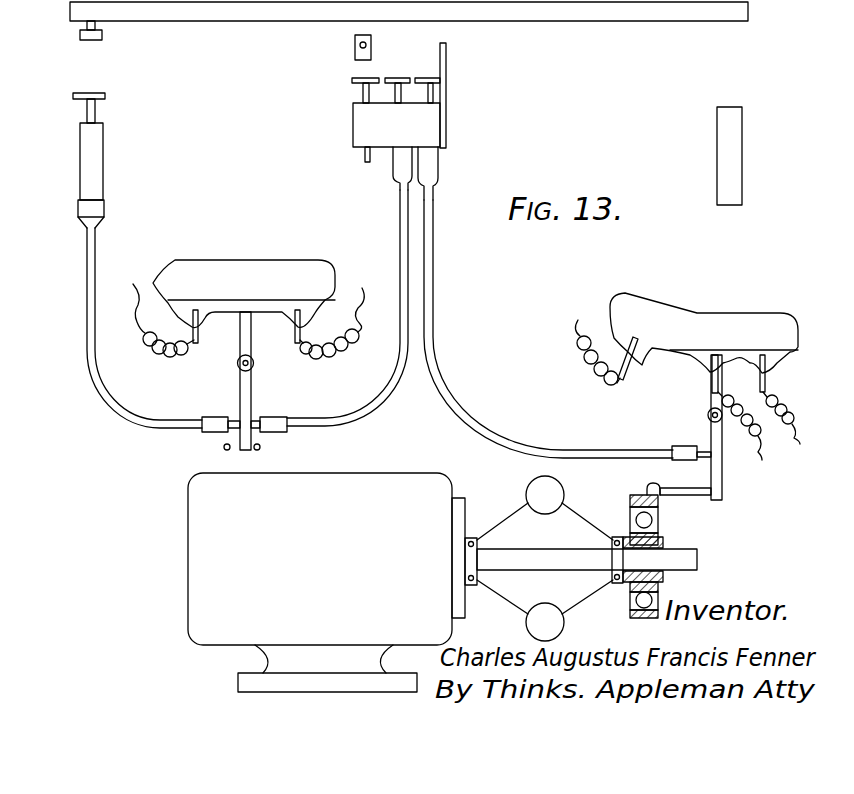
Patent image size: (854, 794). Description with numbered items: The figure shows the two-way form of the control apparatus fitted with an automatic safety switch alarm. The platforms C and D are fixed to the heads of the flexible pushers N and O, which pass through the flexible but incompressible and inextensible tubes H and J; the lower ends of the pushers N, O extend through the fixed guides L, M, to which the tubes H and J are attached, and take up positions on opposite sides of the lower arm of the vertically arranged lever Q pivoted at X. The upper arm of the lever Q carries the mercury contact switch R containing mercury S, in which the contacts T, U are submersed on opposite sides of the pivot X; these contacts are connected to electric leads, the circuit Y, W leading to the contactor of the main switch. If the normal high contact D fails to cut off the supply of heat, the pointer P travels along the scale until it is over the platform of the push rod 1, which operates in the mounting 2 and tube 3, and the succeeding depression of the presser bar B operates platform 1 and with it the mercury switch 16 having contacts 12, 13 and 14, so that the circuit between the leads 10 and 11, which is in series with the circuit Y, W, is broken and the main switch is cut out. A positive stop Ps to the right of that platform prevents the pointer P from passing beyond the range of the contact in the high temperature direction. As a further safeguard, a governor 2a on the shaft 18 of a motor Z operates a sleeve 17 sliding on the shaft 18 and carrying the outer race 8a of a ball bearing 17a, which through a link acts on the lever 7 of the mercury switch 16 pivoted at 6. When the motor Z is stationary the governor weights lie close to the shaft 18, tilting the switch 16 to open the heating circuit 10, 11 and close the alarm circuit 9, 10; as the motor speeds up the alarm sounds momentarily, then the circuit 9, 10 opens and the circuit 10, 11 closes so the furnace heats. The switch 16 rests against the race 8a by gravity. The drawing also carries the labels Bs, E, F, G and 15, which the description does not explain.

The presser bar B is at (549, 21).
The bar stop Bs is at (728, 153).
The platform C is at (90, 93).
The syringe cylinder E is at (100, 152).
The tube H is at (108, 400).
The pointer P is at (355, 44).
The indicator box F is at (372, 48).
The platform D is at (400, 83).
The push rod 1 is at (432, 91).
The positive stop Ps is at (446, 52).
The tube G is at (401, 166).
The mounting 2 is at (433, 164).
The tube J is at (399, 213).
The tube 3 is at (434, 306).
The mercury contact switch R is at (240, 278).
The mercury S is at (207, 312).
The contact T is at (199, 340).
The contact U is at (297, 340).
The lever Q is at (240, 392).
The pivot X is at (253, 368).
The circuit lead Y is at (157, 311).
The electric lead W is at (339, 313).
The fixed guide L is at (210, 433).
The flexible pusher N is at (228, 440).
The flexible pusher O is at (262, 434).
The fixed guide M is at (290, 432).
The motor Z is at (347, 474).
The sleeve 17 is at (665, 547).
The governor 2a is at (556, 487).
The outer race 8a is at (634, 512).
The ball bearing 17a is at (660, 522).
The shaft 18 is at (700, 572).
The mercury switch 16 is at (668, 318).
The partition 15 is at (733, 354).
The contact 12 is at (636, 360).
The contact 13 is at (710, 385).
The contact 14 is at (768, 370).
The pivot 6 is at (707, 418).
The lever 7 is at (705, 458).
The alarm circuit lead 9 is at (596, 339).
The circuit lead 10 is at (744, 438).
The circuit lead 11 is at (786, 435).